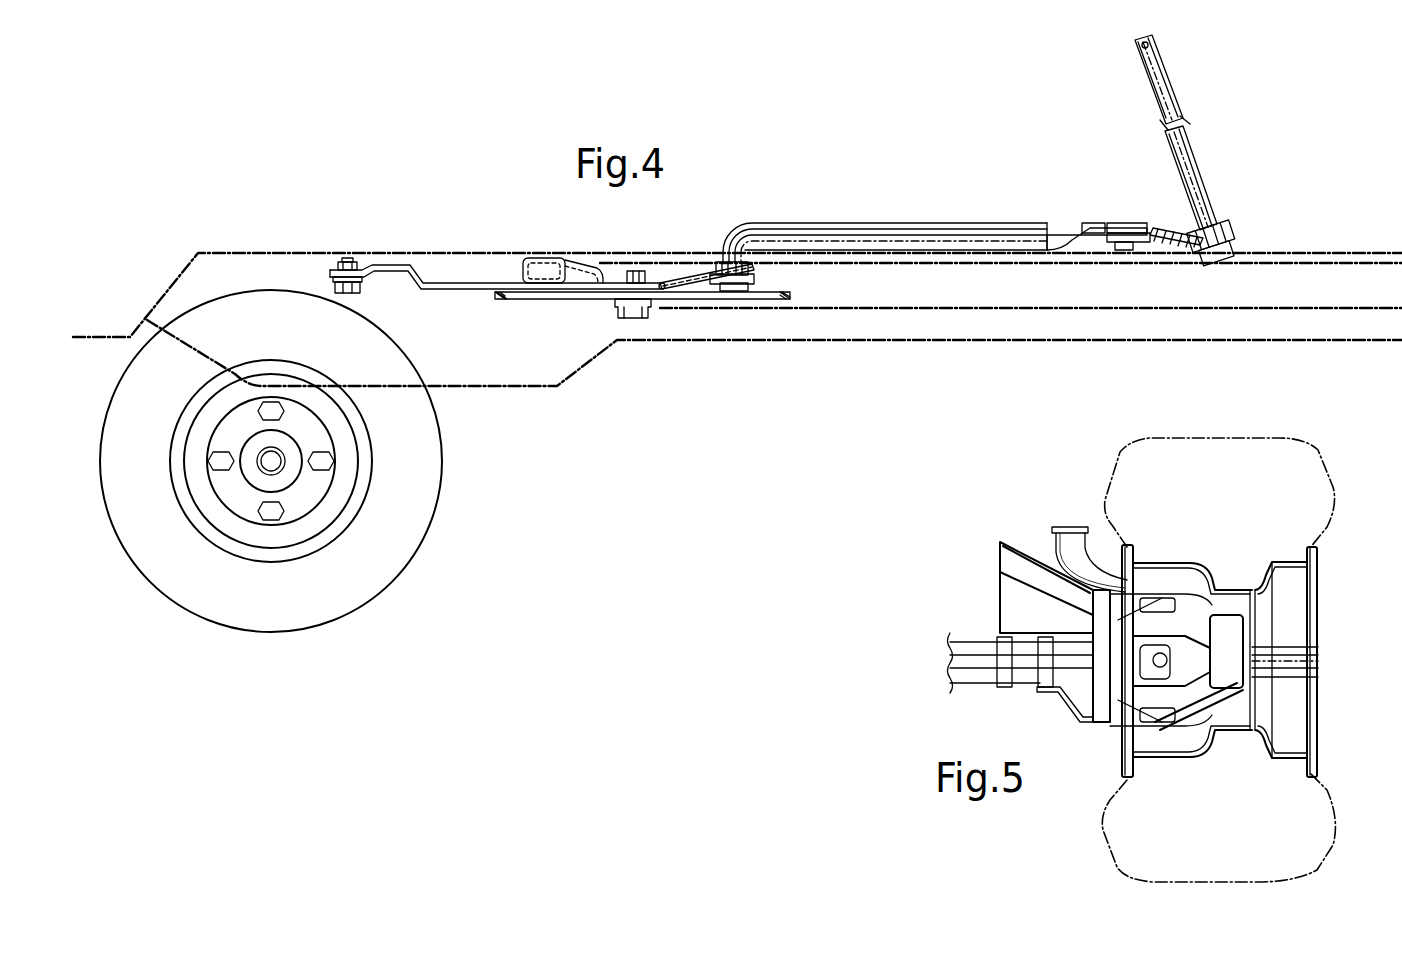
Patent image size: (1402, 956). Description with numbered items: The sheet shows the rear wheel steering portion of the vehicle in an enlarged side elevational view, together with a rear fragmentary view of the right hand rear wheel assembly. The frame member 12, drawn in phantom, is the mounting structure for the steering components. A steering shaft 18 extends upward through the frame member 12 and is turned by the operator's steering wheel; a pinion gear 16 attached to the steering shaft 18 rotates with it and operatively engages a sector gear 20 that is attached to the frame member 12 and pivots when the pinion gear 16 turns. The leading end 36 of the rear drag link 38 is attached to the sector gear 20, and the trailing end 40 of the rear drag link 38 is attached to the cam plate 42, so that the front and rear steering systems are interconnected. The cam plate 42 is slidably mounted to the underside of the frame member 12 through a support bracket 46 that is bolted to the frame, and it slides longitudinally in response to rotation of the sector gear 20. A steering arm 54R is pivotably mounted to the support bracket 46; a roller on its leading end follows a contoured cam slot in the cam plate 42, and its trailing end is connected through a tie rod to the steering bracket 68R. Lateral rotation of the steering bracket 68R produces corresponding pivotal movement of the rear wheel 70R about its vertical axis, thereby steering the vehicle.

In FIG. 4, the frame member 12 is at (475, 252).
In FIG. 4, the pinion gear 16 is at (1237, 223).
In FIG. 4, the steering shaft 18 is at (1193, 147).
In FIG. 4, the sector gear 20 is at (1175, 230).
In FIG. 4, the leading end 36 is at (1122, 223).
In FIG. 4, the rear drag link 38 is at (913, 232).
In FIG. 4, the trailing end 40 is at (737, 228).
In FIG. 4, the cam plate 42 is at (790, 296).
In FIG. 4, the support bracket 46 is at (583, 260).
In FIG. 4, the steering arm 54R is at (447, 293).
In FIG. 5, the steering bracket 68R is at (1070, 527).
In FIG. 4, the rear wheel 70R is at (445, 466).
In FIG. 5, the rear wheel 70R is at (1113, 458).